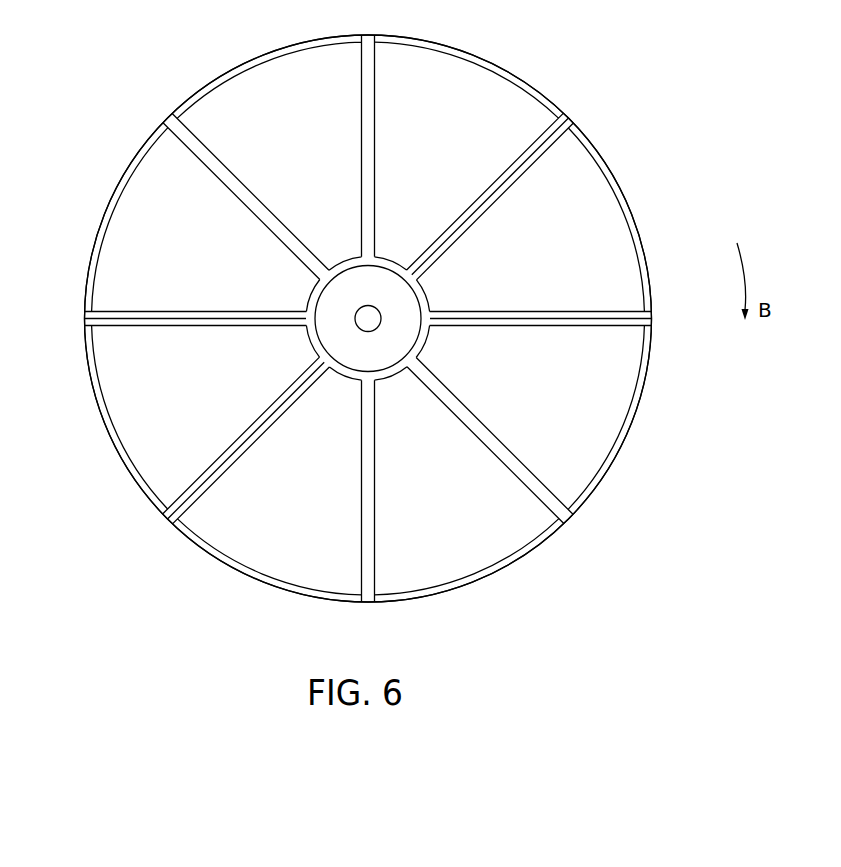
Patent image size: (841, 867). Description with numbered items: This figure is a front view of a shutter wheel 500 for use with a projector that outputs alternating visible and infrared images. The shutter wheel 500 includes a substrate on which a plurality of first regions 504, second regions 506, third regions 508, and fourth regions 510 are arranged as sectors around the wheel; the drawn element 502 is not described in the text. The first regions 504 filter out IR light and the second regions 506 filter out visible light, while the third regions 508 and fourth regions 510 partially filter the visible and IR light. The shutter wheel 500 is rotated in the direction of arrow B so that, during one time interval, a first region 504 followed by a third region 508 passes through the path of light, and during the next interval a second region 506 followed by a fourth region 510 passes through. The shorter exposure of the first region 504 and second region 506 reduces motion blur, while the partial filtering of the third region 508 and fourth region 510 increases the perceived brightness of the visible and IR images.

The shutter wheel 500 is at (630, 122).
The outer rim 502 is at (654, 325).
The first region 504 is at (137, 213).
The second region 506 is at (453, 72).
The third region 508 is at (605, 192).
The fourth region 510 is at (270, 78).